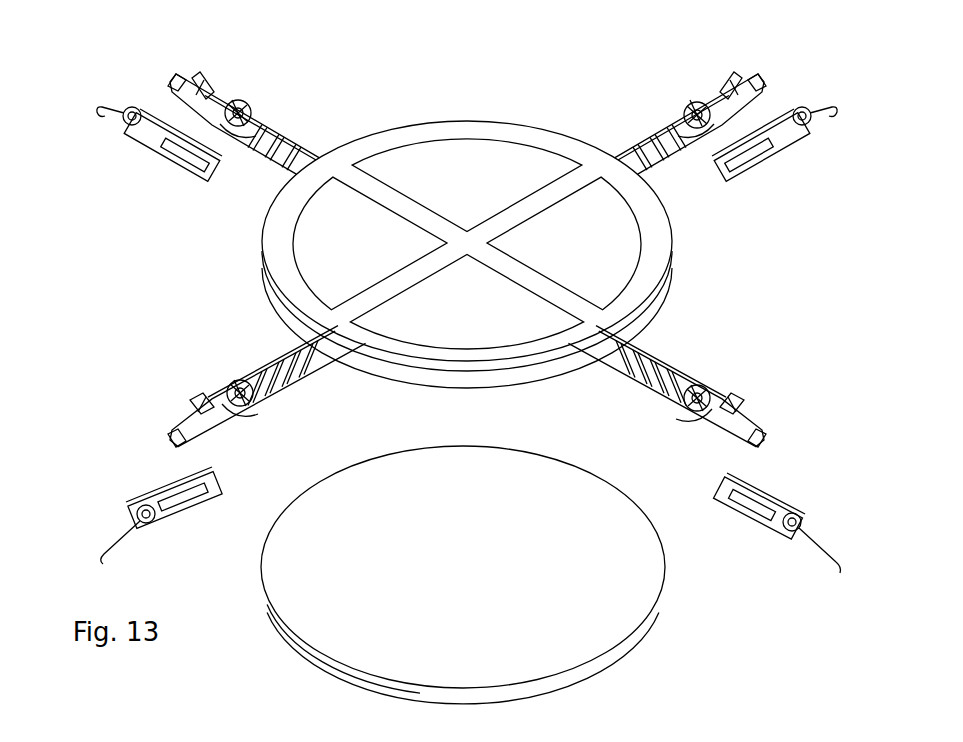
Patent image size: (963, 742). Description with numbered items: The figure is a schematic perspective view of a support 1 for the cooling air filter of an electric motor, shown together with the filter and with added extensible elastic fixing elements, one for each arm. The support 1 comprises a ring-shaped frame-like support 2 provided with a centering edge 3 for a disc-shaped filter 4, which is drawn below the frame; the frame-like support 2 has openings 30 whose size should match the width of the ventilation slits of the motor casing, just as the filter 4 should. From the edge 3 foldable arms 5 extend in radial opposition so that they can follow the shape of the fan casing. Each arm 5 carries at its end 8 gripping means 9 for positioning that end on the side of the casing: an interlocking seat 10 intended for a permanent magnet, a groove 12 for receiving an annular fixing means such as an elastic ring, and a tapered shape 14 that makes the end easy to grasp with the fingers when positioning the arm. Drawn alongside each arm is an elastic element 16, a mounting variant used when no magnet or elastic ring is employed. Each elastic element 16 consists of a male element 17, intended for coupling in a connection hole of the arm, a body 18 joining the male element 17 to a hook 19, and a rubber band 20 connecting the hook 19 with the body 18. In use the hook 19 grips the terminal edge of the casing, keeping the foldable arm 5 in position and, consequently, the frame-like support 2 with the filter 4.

The support 1 is at (540, 108).
The frame-like support 2 is at (650, 243).
The centering edge 3 is at (488, 328).
The filter 4 is at (546, 575).
The arms 5 is at (282, 132).
The end 8 is at (214, 132).
The gripping means 9 is at (230, 70).
The interlocking seat 10 is at (252, 102).
The groove 12 is at (713, 95).
The tapered shape 14 is at (182, 72).
The elastic element 16 is at (454, 332).
The male element 17 is at (203, 178).
The body 18 is at (737, 543).
The hook 19 is at (96, 114).
The rubber band 20 is at (146, 106).
The openings 30 is at (468, 165).